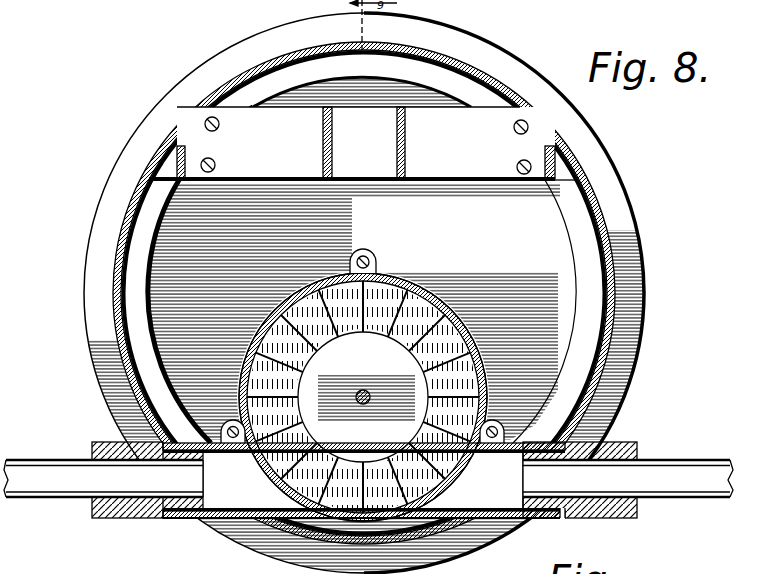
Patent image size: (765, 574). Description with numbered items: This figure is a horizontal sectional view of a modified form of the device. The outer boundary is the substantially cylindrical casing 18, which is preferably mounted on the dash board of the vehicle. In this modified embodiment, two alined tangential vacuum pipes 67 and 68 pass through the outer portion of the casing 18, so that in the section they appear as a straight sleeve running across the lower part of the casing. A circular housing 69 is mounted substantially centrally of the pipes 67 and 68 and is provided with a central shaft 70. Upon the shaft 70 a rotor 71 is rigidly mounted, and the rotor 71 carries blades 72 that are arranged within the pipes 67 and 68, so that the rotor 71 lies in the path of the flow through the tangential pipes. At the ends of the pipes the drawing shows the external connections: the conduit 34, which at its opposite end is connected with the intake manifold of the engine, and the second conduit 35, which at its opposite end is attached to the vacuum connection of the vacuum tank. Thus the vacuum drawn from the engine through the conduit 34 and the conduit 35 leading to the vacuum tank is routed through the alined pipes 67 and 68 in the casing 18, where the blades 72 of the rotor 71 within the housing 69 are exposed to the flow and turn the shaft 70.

The casing 18 is at (600, 197).
The conduit 34 is at (692, 452).
The second conduit 35 is at (33, 459).
The tangential vacuum pipe 67 is at (235, 498).
The tangential vacuum pipe 68 is at (500, 490).
The circular housing 69 is at (362, 384).
The central shaft 70 is at (358, 395).
The rotor 71 is at (363, 397).
The blades 72 is at (268, 337).